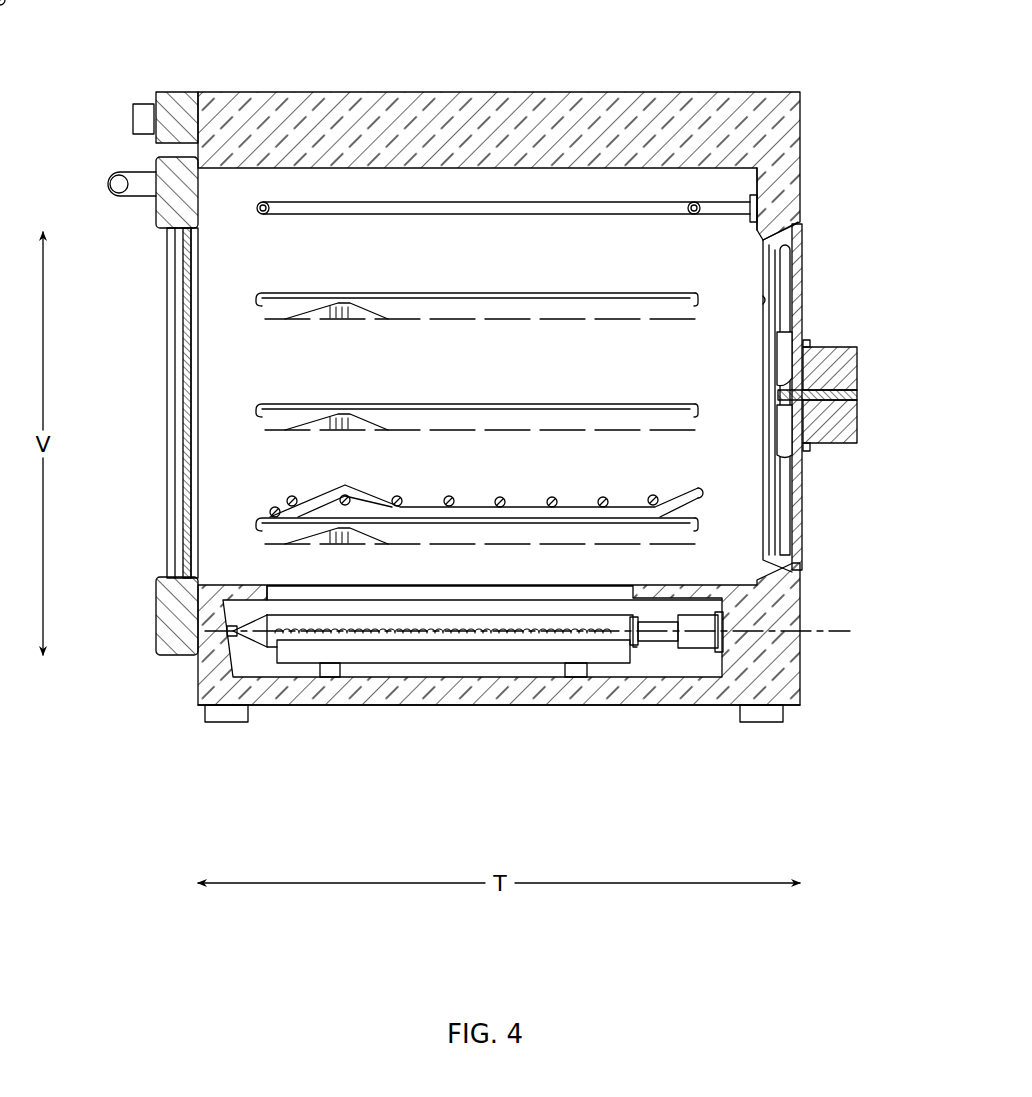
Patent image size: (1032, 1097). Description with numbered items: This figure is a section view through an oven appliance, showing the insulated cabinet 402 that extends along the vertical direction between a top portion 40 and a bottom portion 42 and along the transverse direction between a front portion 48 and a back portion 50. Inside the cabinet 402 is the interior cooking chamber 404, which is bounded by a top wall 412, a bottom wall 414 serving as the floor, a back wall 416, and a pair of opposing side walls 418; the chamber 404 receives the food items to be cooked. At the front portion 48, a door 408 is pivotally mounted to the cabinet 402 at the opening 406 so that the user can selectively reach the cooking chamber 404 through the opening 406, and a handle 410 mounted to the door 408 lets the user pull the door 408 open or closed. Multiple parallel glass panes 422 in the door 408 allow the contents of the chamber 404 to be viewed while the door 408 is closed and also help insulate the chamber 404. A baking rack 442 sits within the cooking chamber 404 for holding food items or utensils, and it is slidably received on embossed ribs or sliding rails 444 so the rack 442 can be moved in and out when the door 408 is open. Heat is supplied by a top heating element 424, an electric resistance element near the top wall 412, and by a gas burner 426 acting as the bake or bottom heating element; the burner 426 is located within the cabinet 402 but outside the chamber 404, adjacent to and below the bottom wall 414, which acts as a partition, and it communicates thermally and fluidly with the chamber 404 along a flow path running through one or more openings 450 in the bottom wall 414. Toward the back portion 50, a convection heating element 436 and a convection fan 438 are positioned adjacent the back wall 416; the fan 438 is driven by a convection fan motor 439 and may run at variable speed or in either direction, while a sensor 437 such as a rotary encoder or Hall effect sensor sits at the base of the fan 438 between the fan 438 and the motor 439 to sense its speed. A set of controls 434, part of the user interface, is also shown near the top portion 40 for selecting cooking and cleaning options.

The top portion 40 is at (240, 80).
The insulated cabinet 402 is at (412, 120).
The controls 434 is at (145, 118).
The handle 410 is at (110, 183).
The door 408 is at (170, 205).
The opening 406 is at (196, 400).
The glass panes 422 is at (195, 273).
The front portion 48 is at (160, 682).
The bottom wall 414 is at (742, 590).
The bottom portion 42 is at (712, 740).
The openings 450 is at (460, 596).
The gas burner 426 is at (495, 650).
The top wall 412 is at (500, 172).
The top heating element 424 is at (583, 208).
The back wall 416 is at (755, 182).
The side walls 418 is at (447, 265).
The sliding rails 444 is at (587, 418).
The baking rack 442 is at (686, 497).
The back portion 50 is at (839, 327).
The cooking chamber 404 is at (740, 282).
The convection heating element 436 is at (788, 494).
The convection fan 438 is at (786, 356).
The sensor 437 is at (806, 385).
The convection fan motor 439 is at (858, 421).